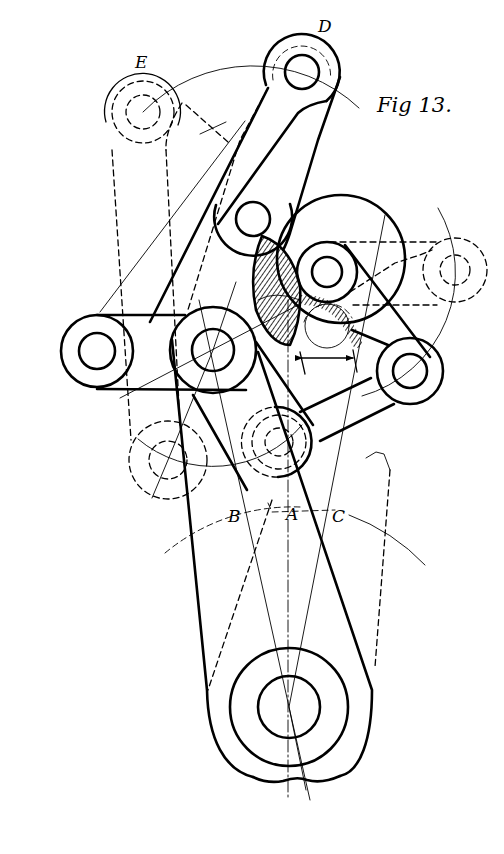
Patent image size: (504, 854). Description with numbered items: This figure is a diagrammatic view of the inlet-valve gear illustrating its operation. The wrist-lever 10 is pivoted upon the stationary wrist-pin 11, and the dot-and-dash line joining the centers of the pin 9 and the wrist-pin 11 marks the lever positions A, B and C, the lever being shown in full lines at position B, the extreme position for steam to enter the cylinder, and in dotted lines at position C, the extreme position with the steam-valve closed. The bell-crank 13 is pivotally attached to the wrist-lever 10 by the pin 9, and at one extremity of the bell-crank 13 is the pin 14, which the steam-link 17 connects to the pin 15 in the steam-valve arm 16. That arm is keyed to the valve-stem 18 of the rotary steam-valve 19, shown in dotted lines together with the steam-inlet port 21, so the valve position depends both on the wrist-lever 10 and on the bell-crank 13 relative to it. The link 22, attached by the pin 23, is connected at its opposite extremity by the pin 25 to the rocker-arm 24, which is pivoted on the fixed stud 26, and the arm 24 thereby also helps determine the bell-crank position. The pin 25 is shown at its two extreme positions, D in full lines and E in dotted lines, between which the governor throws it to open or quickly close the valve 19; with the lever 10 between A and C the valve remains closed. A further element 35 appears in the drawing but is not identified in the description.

The pin 9 is at (230, 350).
The wrist-lever 10 is at (203, 578).
The wrist-pin 11 is at (289, 707).
The bell-crank 13 is at (123, 403).
The pin 14 is at (322, 441).
The pin 15 is at (420, 382).
The steam-valve arm 16 is at (400, 336).
The steam-link 17 is at (362, 414).
The valve-stem 18 is at (328, 268).
The rotary steam-valve 19 is at (256, 272).
The steam-inlet port 21 is at (335, 365).
The link 22 is at (220, 166).
The pin 23 is at (88, 357).
The rocker-arm 24 is at (302, 153).
The pin 25 is at (310, 72).
The fixed stud 26 is at (255, 213).
The pivot 35 is at (452, 266).